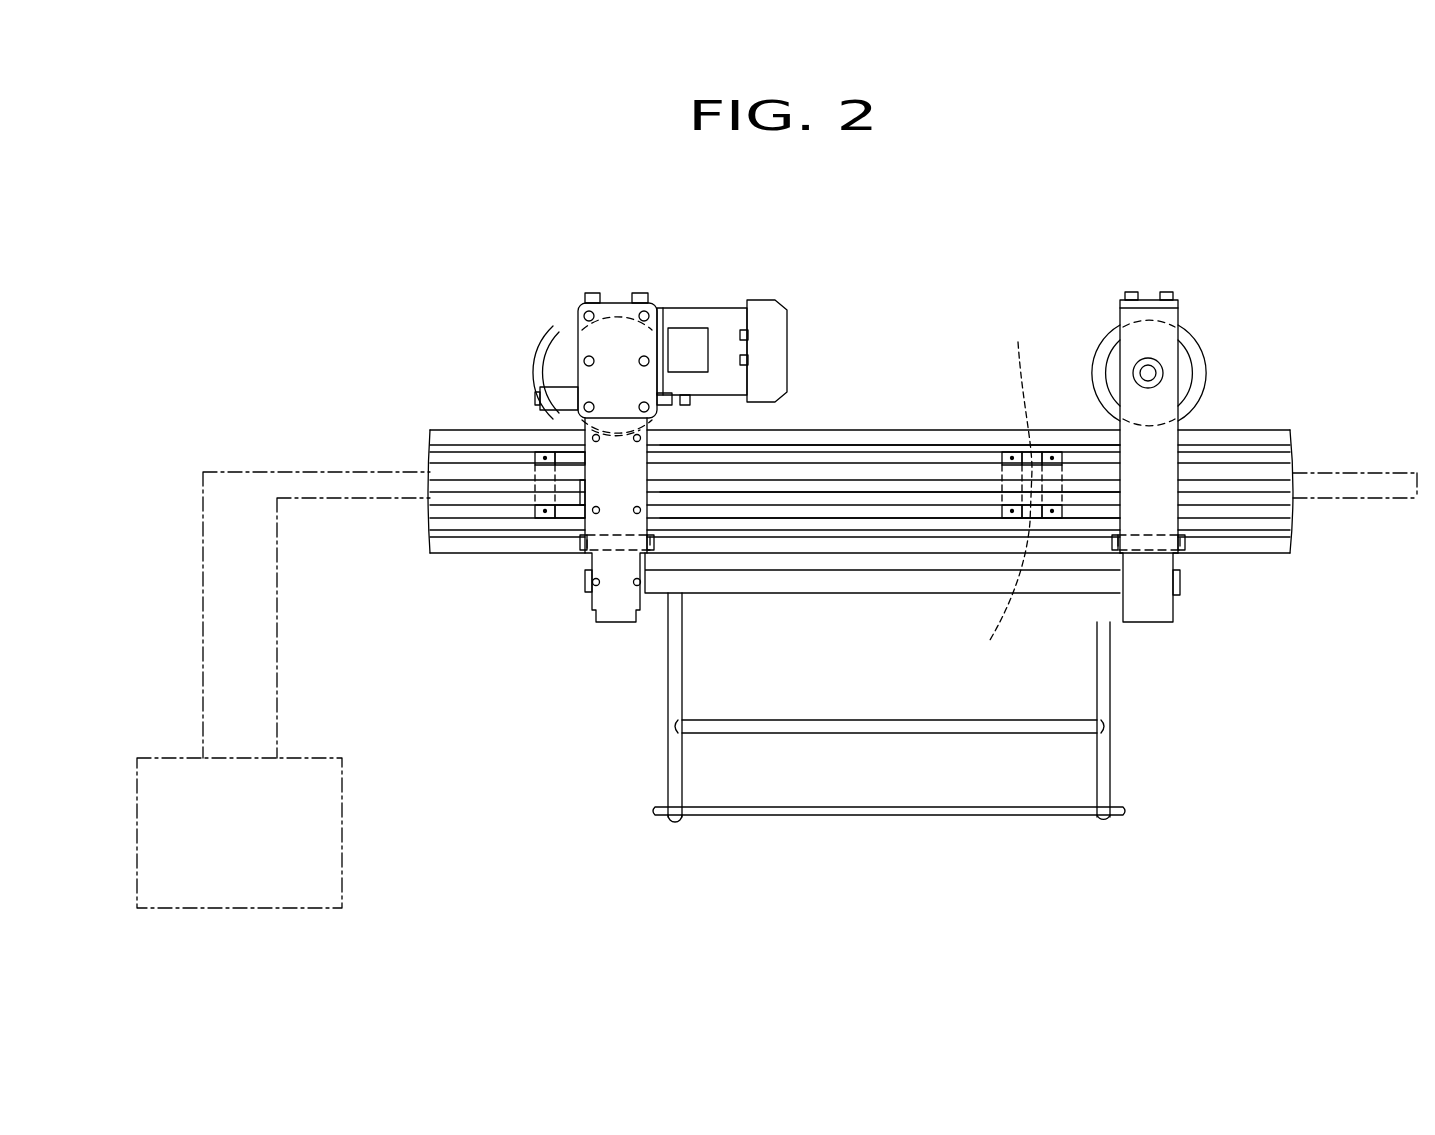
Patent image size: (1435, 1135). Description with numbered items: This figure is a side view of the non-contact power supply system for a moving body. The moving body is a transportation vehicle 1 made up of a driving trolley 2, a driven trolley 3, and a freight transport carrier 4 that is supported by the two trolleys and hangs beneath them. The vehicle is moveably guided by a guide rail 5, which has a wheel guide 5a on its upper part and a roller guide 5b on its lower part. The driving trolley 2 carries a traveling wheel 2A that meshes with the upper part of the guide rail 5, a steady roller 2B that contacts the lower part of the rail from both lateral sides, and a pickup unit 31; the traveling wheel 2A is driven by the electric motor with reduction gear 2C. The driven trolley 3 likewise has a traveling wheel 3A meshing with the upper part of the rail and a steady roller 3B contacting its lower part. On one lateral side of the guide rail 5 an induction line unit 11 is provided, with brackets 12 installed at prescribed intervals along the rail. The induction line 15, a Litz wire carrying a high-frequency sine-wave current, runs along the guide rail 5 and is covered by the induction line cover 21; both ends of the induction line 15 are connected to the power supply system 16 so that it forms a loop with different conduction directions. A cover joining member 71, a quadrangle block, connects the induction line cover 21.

The transportation vehicle 1 is at (1134, 430).
The driving trolley 2 is at (570, 304).
The traveling wheel 2A is at (672, 400).
The steady roller 2B is at (580, 548).
The electric motor with reduction gear 2C is at (690, 320).
The driven trolley 3 is at (1134, 455).
The traveling wheel 3A is at (1205, 375).
The steady roller 3B is at (1108, 548).
The freight transport carrier 4 is at (1122, 755).
The guide rail 5 is at (1247, 425).
The wheel guide 5a is at (877, 440).
The roller guide 5b is at (808, 540).
The induction line unit 11 is at (1262, 460).
The brackets 12 is at (535, 453).
The induction line 15 is at (347, 470).
The power supply system 16 is at (335, 757).
The induction line cover 21 is at (955, 500).
The pickup unit 31 is at (568, 505).
The cover joining member 71 is at (1000, 494).